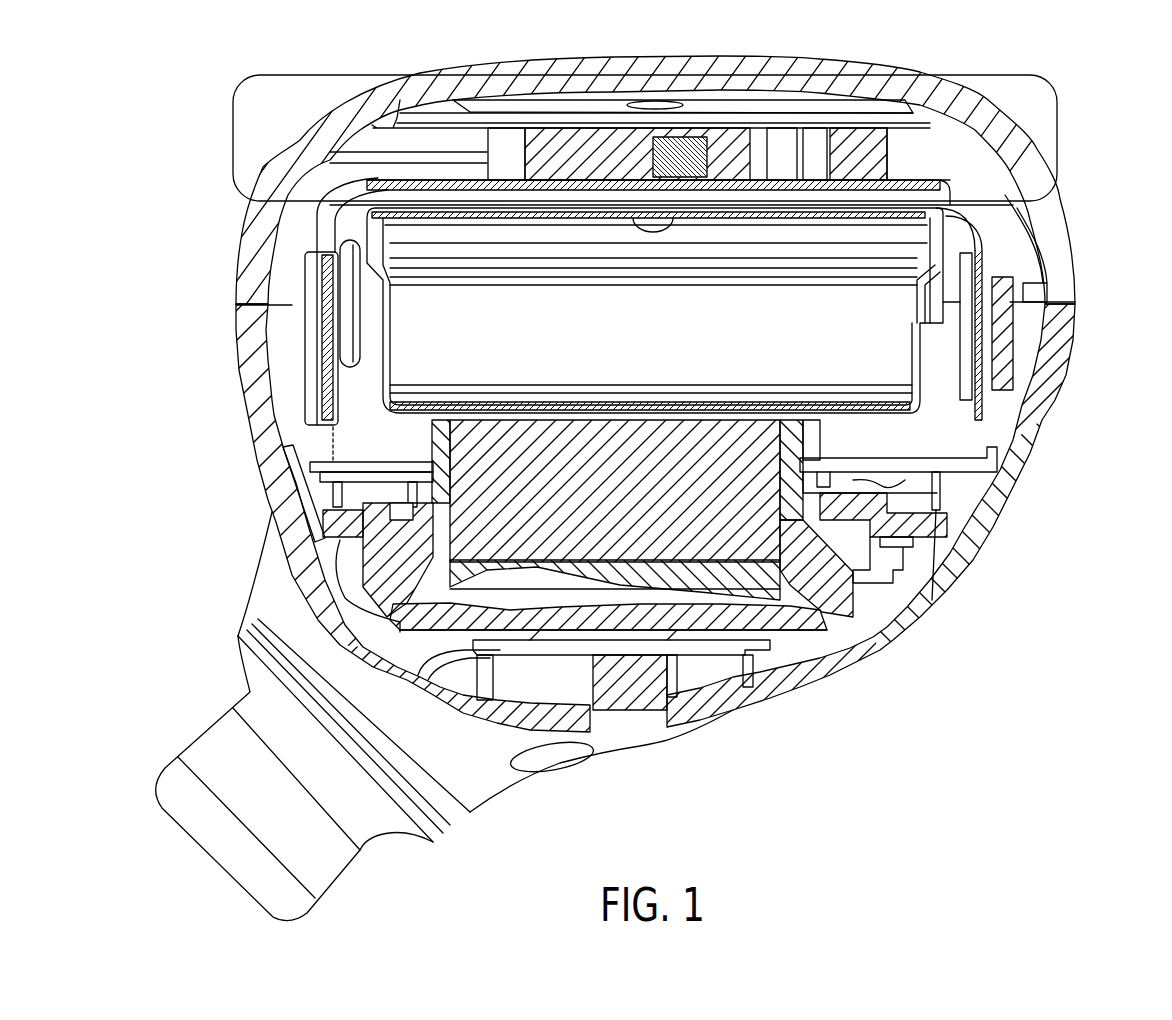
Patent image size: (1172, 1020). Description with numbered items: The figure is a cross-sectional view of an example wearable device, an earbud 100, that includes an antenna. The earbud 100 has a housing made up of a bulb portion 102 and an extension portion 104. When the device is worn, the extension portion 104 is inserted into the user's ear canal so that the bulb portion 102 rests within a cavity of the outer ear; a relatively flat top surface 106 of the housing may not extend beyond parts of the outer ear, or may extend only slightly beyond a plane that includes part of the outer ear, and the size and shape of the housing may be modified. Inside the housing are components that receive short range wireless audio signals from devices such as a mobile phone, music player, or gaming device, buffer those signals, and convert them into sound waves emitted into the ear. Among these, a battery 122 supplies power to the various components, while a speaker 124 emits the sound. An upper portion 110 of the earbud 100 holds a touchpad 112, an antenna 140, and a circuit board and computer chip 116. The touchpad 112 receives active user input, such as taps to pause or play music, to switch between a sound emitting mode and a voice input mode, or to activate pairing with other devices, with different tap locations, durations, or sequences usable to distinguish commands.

The earbud 100 is at (1090, 214).
The bulb portion 102 is at (257, 448).
The extension portion 104 is at (193, 740).
The top surface 106 is at (643, 56).
The upper portion 110 is at (277, 73).
The touchpad 112 is at (827, 113).
The circuit board and computer chip 116 is at (620, 138).
The battery 122 is at (885, 368).
The speaker 124 is at (760, 510).
The antenna 140 is at (327, 173).